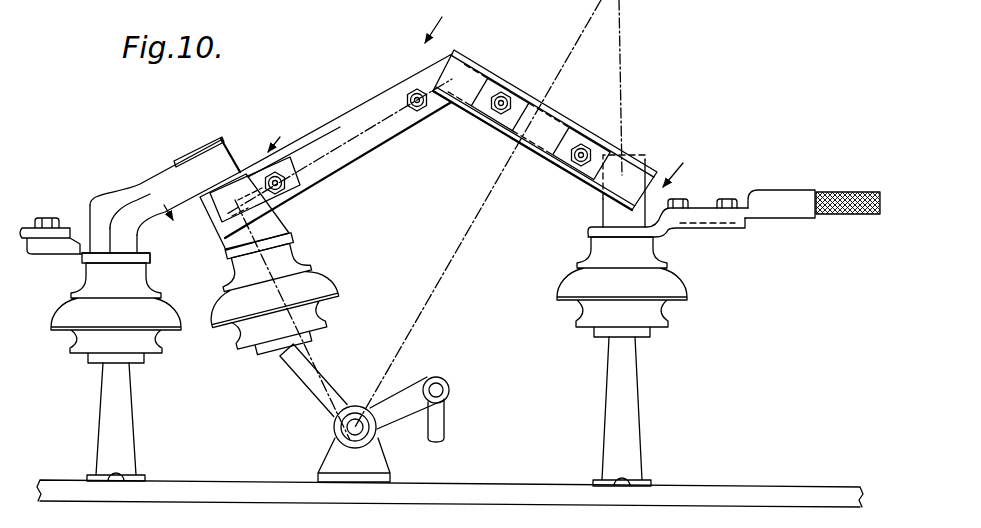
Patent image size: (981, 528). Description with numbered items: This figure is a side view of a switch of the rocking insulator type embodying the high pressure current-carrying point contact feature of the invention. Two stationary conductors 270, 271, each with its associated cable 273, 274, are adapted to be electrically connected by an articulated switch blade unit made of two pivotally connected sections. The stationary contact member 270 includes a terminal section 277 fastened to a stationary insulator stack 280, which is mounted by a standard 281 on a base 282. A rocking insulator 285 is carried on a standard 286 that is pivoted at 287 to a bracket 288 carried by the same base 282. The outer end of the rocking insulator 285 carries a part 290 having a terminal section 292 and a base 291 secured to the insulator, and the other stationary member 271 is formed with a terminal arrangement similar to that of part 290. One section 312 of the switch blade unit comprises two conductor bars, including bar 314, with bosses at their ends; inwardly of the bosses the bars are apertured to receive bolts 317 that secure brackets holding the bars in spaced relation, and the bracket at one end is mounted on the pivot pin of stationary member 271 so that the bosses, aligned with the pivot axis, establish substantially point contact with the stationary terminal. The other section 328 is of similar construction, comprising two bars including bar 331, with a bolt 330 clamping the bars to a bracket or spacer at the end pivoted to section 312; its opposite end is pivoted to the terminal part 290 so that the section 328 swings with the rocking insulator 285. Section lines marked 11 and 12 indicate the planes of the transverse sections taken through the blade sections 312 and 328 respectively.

The cable 273 is at (44, 218).
The stationary conductor 270 is at (96, 250).
The stationary insulator stack 280 is at (102, 367).
The standard 281 is at (118, 411).
The base 282 is at (210, 490).
The terminal section 277 is at (170, 181).
The terminal section 292 is at (203, 143).
The section line 12- 12 is at (221, 185).
The switch blade section 328 is at (368, 88).
The bar 331 is at (370, 152).
The bolt 330 is at (418, 110).
The terminal part 290 is at (281, 221).
The base 291 is at (222, 274).
The rocking insulator 285 is at (326, 259).
The standard 286 is at (328, 358).
The pivot 287 is at (356, 419).
The bracket 288 is at (334, 456).
The switch blade section 312 is at (561, 106).
The conductor bar 314 is at (520, 128).
The bolts 317 is at (506, 93).
The section line 11- 11 is at (553, 106).
The stationary conductor 271 is at (672, 232).
The cable 274 is at (773, 197).